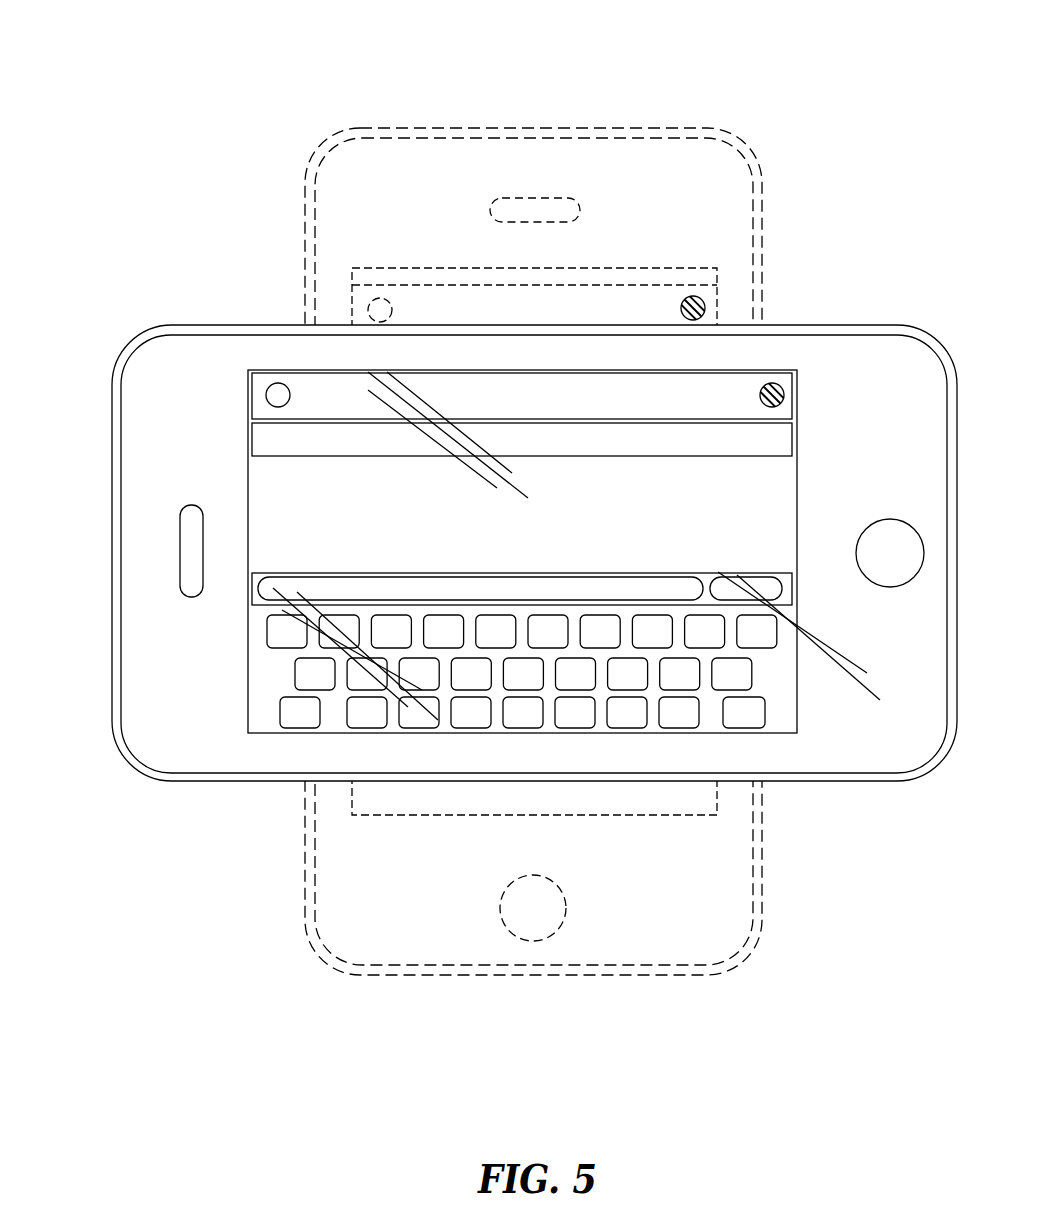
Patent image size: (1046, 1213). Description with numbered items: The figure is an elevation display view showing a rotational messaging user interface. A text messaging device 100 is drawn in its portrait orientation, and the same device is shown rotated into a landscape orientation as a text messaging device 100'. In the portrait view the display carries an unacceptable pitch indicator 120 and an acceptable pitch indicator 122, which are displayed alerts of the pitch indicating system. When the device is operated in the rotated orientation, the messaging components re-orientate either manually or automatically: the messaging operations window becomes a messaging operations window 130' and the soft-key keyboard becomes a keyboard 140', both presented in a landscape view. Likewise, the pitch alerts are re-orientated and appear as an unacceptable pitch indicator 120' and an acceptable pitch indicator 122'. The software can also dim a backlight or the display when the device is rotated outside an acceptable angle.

The text messaging device 100 is at (487, 514).
The text messaging device in rotated orientation 100' is at (498, 600).
The unacceptable pitch indicator 120 is at (422, 492).
The unacceptable pitch indicator (re-orientated) 120' is at (485, 515).
The acceptable pitch indicator 122 is at (753, 265).
The acceptable pitch indicator (re-orientated) 122' is at (833, 350).
The messaging operations window (landscape) 130' is at (187, 551).
The keyboard (landscape) 140' is at (602, 659).